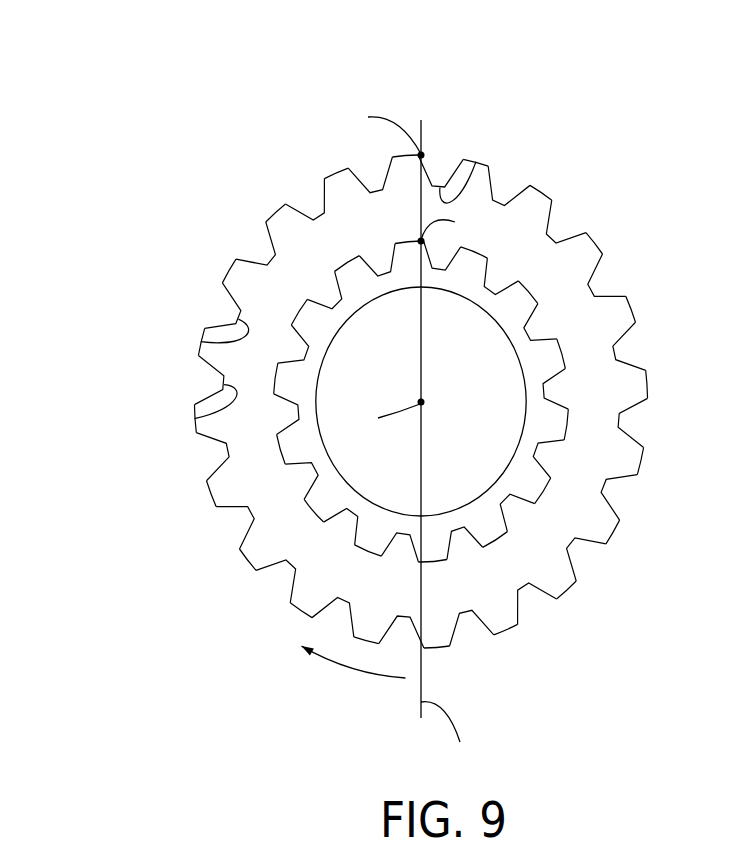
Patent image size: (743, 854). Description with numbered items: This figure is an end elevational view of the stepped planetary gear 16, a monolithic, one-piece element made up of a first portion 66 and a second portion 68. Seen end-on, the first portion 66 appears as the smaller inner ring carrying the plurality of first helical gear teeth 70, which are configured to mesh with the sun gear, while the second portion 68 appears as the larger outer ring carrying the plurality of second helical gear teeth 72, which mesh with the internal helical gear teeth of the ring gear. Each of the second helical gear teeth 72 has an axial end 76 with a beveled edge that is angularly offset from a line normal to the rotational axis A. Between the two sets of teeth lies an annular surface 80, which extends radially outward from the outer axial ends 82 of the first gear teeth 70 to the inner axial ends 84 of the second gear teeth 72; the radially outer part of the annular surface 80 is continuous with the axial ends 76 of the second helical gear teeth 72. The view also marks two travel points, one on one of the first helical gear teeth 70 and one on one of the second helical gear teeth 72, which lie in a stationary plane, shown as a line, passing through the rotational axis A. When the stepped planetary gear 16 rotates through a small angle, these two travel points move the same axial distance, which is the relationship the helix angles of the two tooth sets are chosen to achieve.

The stepped planetary gear 16 is at (565, 113).
The first portion 66 is at (303, 613).
The second portion 68 is at (567, 593).
The first helical gear teeth 70 is at (530, 485).
The second helical gear teeth 72 is at (578, 258).
The axial end 76 is at (280, 220).
The annular surface 80 is at (583, 455).
The outer axial ends 82 is at (343, 260).
The inner axial ends 84 is at (457, 185).